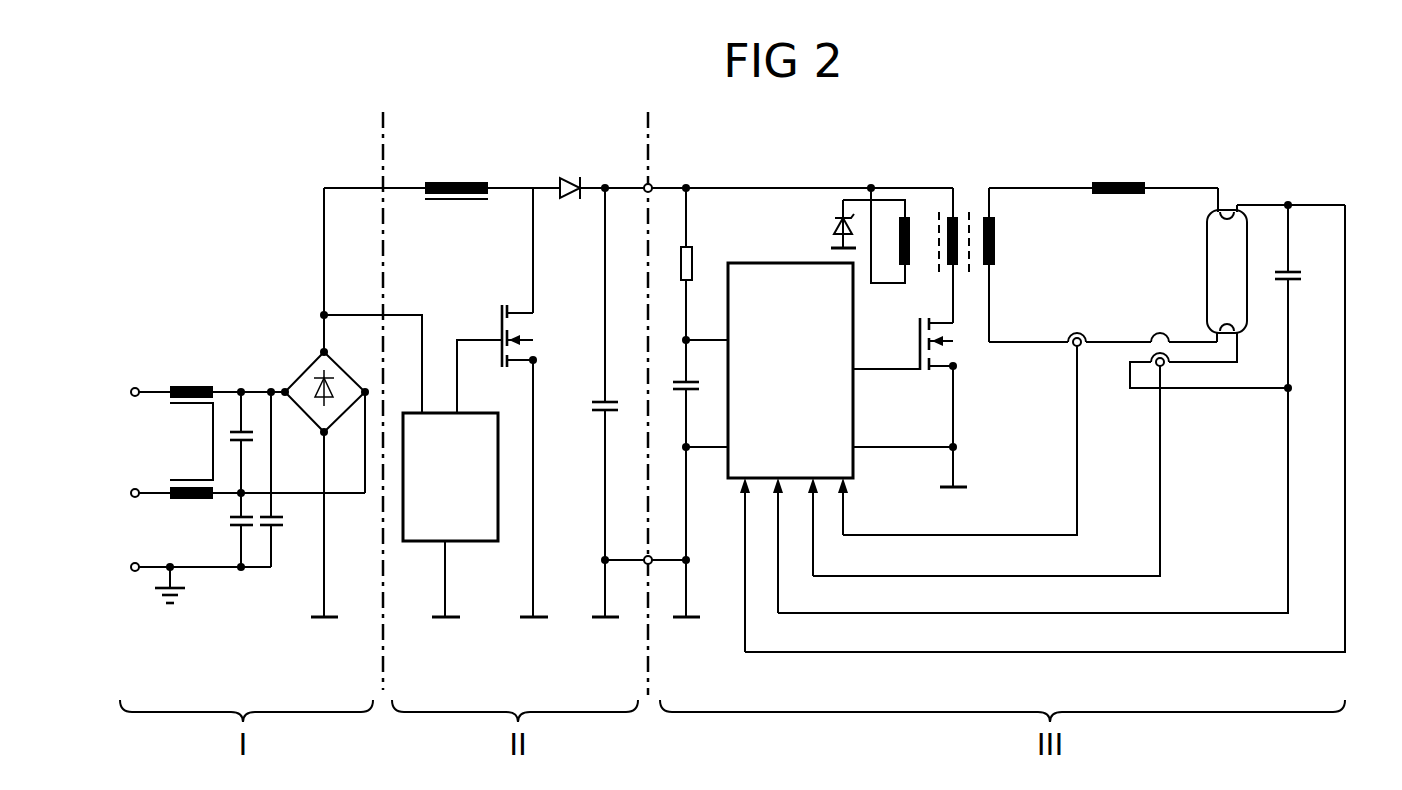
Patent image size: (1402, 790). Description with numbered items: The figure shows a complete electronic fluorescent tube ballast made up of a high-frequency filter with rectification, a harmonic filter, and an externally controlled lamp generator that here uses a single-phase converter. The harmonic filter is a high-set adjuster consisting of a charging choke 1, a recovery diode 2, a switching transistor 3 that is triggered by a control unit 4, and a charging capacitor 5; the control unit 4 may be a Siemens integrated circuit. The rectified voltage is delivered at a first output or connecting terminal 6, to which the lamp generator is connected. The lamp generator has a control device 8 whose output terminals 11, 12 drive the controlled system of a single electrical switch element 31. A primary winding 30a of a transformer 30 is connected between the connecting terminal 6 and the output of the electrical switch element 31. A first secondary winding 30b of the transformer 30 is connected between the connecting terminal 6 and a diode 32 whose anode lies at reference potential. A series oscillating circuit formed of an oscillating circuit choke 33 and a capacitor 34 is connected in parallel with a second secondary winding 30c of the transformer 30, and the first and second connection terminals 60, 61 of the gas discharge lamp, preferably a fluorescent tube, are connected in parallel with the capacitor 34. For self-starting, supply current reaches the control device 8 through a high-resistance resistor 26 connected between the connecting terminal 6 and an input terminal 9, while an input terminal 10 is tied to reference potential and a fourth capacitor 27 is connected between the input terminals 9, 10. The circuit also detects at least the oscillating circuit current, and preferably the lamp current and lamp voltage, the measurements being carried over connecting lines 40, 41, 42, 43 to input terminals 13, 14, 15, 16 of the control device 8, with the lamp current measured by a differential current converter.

The charging choke 1 is at (456, 173).
The recovery diode 2 is at (570, 173).
The switching transistor 3 is at (501, 326).
The control unit 4 is at (450, 515).
The charging capacitor 5 is at (596, 402).
The first output or connecting terminal 6 is at (689, 179).
The control device 8 is at (821, 457).
The input terminal 9 is at (718, 342).
The input terminal 10 is at (718, 447).
The output terminal 11 is at (869, 371).
The output terminal 12 is at (863, 447).
The input terminal 13 is at (746, 549).
The input terminal 14 is at (777, 530).
The input terminal 15 is at (811, 511).
The input terminal 16 is at (842, 491).
The high-resistance resistor 26 is at (695, 258).
The fourth capacitor 27 is at (699, 499).
The transformer 30 is at (963, 228).
The primary winding 30a is at (945, 271).
The first secondary winding 30b is at (905, 269).
The second secondary winding 30c is at (1000, 243).
The electrical switch element 31 is at (958, 348).
The diode 32 is at (827, 224).
The oscillating circuit choke 33 is at (1118, 170).
The capacitor 34 is at (1306, 296).
The connecting line 40 is at (960, 441).
The connecting line 41 is at (986, 471).
The connecting line 42 is at (1033, 501).
The connecting line 43 is at (1045, 428).
The first connection terminal 60 is at (1224, 207).
The second connection terminal 61 is at (1233, 334).